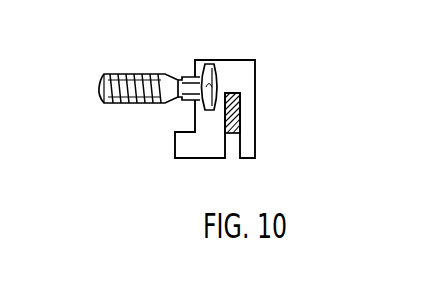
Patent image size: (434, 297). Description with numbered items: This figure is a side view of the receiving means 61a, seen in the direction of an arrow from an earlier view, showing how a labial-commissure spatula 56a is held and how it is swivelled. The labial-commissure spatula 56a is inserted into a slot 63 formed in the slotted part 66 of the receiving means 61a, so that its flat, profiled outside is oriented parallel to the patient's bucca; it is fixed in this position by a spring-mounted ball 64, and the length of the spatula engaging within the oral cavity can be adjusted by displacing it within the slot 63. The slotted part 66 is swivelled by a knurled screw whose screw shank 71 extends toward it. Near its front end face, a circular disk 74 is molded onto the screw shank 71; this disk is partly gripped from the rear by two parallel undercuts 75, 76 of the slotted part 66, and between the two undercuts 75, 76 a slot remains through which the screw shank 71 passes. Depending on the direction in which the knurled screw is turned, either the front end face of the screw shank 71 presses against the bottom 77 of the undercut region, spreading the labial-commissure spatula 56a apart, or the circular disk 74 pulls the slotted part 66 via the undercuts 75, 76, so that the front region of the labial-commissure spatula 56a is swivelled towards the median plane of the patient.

The screw shank 71 is at (97, 92).
The circular disk 74 is at (207, 66).
The undercut 75 is at (196, 77).
The undercut 76 is at (193, 108).
The bottom of the undercut region 77 is at (220, 68).
The receiving means 61a is at (258, 73).
The labial-commissure spatula 56a is at (236, 110).
The slotted part 66 is at (247, 142).
The spring-mounted ball 64 is at (228, 141).
The slot 63 is at (229, 151).